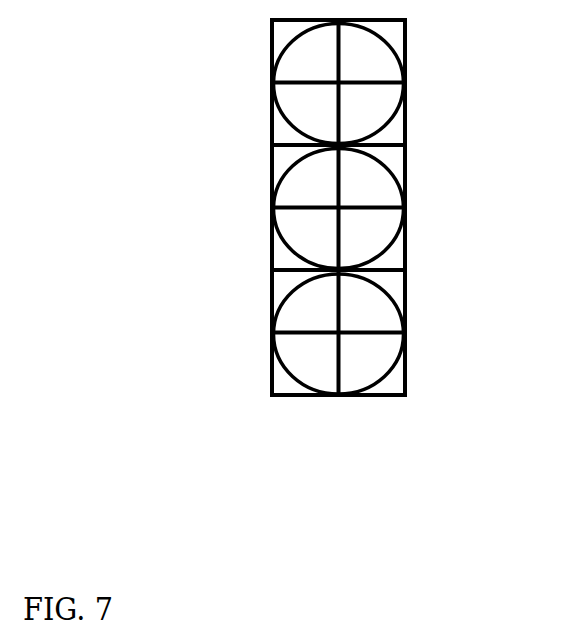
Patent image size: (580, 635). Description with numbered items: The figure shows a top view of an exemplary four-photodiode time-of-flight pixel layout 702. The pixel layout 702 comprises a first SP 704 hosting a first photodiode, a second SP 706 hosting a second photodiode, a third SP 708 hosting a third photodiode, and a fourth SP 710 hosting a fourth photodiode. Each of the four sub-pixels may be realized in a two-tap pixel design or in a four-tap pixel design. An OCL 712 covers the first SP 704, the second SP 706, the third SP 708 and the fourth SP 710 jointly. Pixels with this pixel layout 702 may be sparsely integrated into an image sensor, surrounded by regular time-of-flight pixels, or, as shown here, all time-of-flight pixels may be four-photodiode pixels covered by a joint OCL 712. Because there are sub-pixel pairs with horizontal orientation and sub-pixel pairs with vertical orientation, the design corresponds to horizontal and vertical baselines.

The 4PD ToF pixel layout 702 is at (297, 410).
The first SP 704 is at (271, 285).
The second SP 706 is at (271, 383).
The third SP 708 is at (393, 283).
The fourth SP 710 is at (393, 387).
The OCL 712 is at (372, 316).